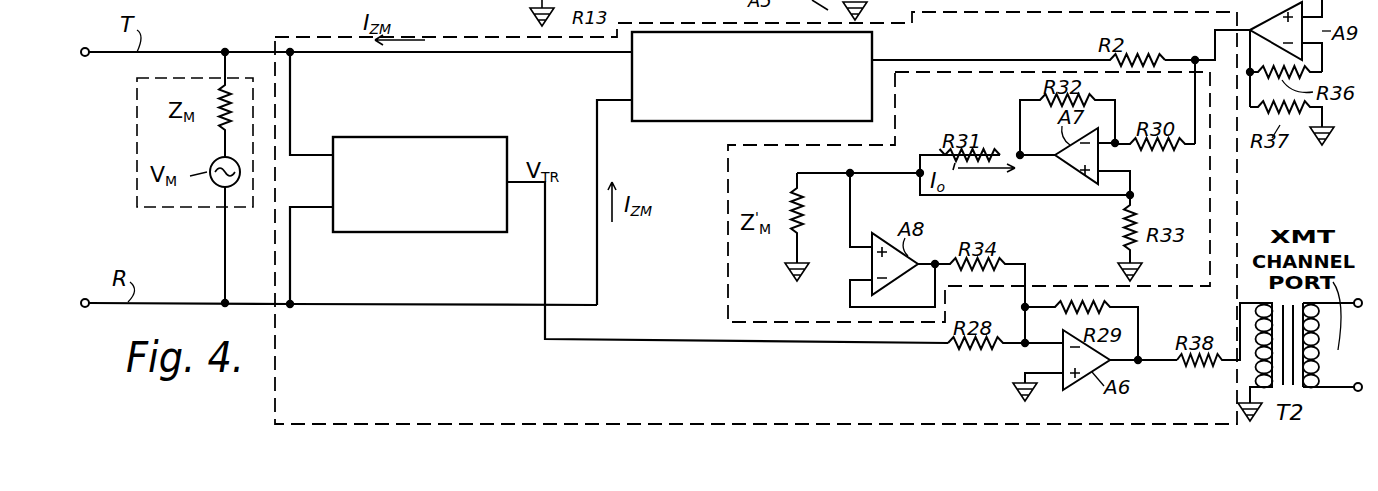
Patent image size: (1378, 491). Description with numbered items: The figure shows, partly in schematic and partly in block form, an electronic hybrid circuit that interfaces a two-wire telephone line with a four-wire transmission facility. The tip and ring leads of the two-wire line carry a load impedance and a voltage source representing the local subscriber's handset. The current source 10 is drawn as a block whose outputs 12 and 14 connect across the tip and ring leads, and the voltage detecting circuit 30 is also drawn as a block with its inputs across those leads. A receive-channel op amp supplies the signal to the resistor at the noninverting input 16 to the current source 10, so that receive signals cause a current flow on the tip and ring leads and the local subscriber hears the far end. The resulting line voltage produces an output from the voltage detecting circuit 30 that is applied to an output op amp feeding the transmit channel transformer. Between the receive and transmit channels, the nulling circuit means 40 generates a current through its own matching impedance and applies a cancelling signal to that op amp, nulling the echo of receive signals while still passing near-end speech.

The current source 10 is at (724, 131).
The output 12 is at (628, 66).
The output 14 is at (609, 110).
The noninverting input 16 is at (1173, 57).
The voltage detecting circuit 30 is at (417, 247).
The nulling circuit means 40 is at (1220, 182).